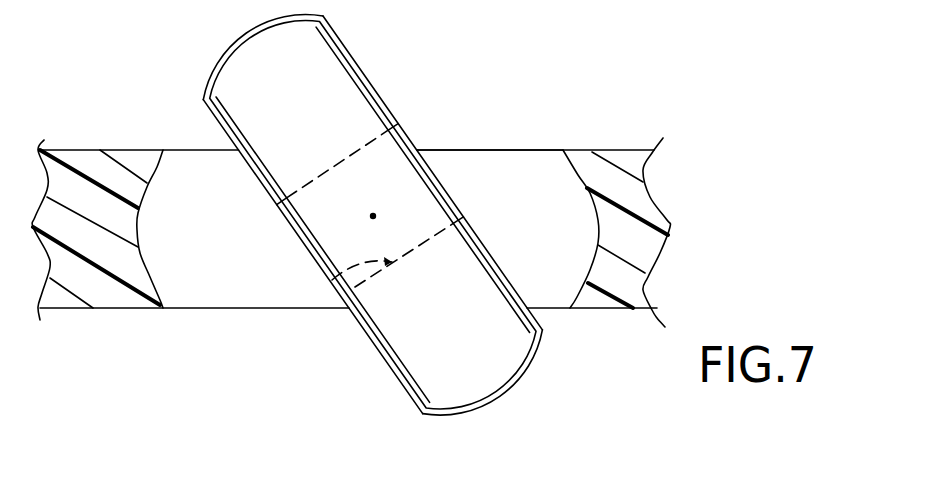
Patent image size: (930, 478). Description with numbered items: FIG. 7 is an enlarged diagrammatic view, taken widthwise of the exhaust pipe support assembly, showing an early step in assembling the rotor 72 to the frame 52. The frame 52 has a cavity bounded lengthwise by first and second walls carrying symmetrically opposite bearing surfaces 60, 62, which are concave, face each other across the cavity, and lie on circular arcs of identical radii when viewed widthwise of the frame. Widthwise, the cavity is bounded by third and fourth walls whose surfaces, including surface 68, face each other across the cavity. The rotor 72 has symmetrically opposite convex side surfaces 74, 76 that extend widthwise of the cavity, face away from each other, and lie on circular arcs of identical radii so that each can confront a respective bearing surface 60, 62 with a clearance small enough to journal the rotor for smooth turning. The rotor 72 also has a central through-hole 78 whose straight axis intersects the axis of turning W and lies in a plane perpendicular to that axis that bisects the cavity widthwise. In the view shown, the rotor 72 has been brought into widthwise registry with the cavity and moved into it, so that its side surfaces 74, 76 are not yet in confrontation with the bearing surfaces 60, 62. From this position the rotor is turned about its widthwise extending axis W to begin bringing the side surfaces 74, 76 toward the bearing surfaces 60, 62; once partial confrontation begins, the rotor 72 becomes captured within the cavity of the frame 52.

The frame 52 is at (606, 310).
The bearing surface 60 is at (137, 232).
The bearing surface 62 is at (577, 177).
The surface 68 is at (480, 175).
The rotor 72 is at (401, 381).
The side surface 74 is at (233, 45).
The side surface 76 is at (502, 393).
The central through-hole 78 is at (332, 280).
The axis of turning W is at (373, 216).